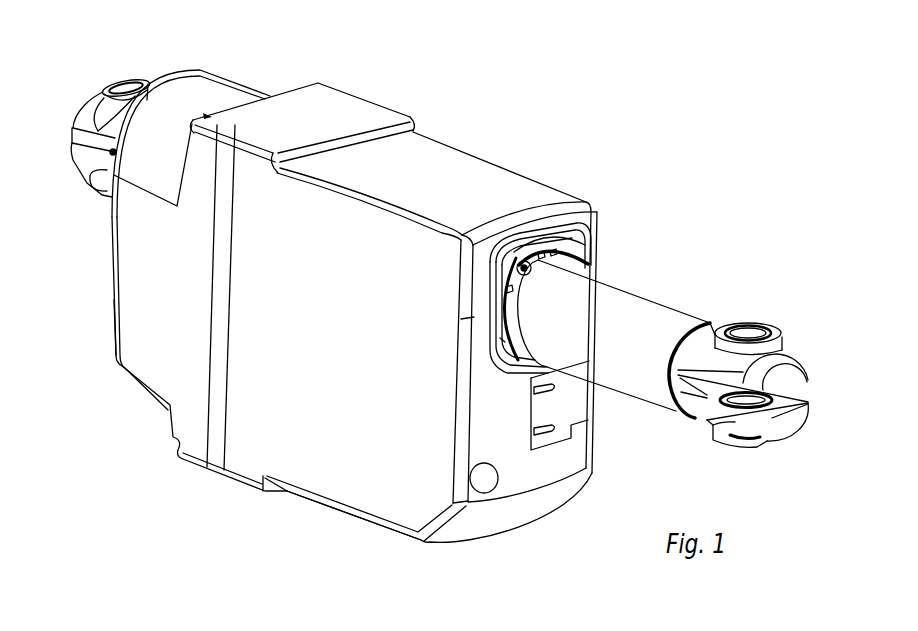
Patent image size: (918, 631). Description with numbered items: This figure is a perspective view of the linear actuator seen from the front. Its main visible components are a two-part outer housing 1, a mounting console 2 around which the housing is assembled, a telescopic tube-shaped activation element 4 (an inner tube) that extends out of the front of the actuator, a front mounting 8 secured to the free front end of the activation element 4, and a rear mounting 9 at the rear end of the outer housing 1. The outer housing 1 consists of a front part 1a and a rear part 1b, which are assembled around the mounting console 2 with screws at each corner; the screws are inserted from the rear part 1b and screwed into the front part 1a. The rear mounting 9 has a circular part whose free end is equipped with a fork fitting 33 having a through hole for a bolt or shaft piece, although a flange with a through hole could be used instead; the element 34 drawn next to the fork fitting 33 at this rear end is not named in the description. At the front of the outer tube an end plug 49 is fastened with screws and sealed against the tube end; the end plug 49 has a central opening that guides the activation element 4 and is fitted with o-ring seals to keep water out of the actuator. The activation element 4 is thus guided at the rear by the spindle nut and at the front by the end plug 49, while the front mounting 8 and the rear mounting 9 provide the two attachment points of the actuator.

The outer housing 1 is at (493, 160).
The front part 1a is at (332, 465).
The rear part 1b is at (172, 360).
The mounting console 2 is at (338, 103).
The activation element 4 is at (608, 301).
The front mounting 8 is at (797, 340).
The rear mounting 9 is at (72, 175).
The fork fitting 33 is at (87, 110).
The release knob 34 is at (138, 92).
The end plug 49 is at (580, 250).